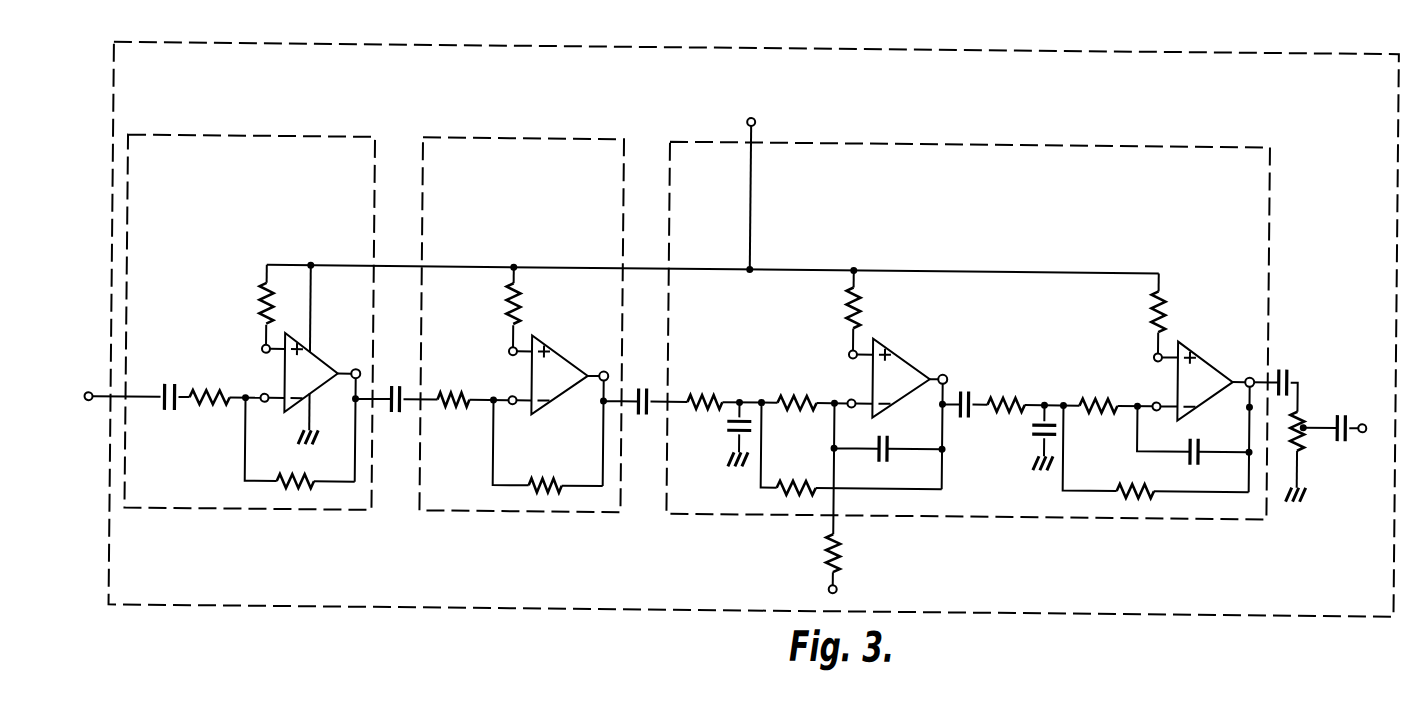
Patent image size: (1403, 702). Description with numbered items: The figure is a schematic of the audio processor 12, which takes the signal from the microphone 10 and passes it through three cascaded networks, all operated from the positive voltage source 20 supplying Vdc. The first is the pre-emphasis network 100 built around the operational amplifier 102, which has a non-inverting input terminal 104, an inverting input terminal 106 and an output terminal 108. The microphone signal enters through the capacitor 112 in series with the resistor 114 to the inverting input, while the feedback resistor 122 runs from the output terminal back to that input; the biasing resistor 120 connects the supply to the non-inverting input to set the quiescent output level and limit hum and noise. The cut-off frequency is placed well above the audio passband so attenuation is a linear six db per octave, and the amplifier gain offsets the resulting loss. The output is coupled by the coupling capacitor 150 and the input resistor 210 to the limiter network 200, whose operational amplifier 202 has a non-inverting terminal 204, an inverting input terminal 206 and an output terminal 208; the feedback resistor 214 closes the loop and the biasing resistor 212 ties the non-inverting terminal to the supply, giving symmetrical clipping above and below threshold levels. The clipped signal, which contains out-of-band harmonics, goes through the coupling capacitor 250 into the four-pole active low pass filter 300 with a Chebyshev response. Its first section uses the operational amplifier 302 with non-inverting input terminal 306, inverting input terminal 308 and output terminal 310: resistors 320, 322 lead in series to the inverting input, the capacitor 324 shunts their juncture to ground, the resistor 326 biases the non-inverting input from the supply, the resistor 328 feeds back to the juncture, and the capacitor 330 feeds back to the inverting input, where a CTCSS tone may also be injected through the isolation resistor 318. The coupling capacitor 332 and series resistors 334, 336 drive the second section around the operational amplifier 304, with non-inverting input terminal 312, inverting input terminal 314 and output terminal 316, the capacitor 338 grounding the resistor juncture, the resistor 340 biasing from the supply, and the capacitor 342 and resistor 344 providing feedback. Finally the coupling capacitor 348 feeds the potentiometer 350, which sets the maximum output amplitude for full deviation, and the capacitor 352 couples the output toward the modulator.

The microphone 10 is at (96, 400).
The audio processor 12 is at (436, 90).
The positive voltage source 20 is at (746, 119).
The pre-emphasis network 100 is at (231, 181).
The operational amplifier 102 is at (312, 398).
The non-inverting input terminal 104 is at (262, 354).
The inverting input terminal 106 is at (266, 397).
The output terminal 108 is at (357, 372).
The capacitor 112 is at (173, 418).
The resistor 114 is at (208, 409).
The biasing resistor 120 is at (259, 312).
The feedback resistor 122 is at (294, 478).
The coupling capacitor 150 is at (396, 389).
The limiter network 200 is at (501, 181).
The operational amplifier 202 is at (555, 406).
The non-inverting terminal 204 is at (509, 354).
The inverting input terminal 206 is at (513, 398).
The output terminal 208 is at (606, 372).
The input resistor 210 is at (452, 410).
The biasing resistor 212 is at (522, 303).
The feedback resistor 214 is at (544, 480).
The coupling capacitor 250 is at (644, 389).
The four-pole active low pass filter 300 is at (973, 181).
The operational amplifier 302 is at (893, 407).
The operational amplifier 304 is at (1197, 407).
The non-inverting input terminal 306 is at (849, 353).
The inverting input terminal 308 is at (853, 397).
The output terminal 310 is at (945, 372).
The non-inverting input terminal 312 is at (1154, 355).
The inverting input terminal 314 is at (1160, 398).
The output terminal 316 is at (1252, 372).
The isolation resistor 318 is at (842, 551).
The resistor 320 is at (700, 395).
The resistor 322 is at (786, 410).
The capacitor 324 is at (728, 427).
The resistor 326 is at (862, 306).
The resistor 328 is at (786, 480).
The capacitor 330 is at (885, 461).
The coupling capacitor 332 is at (962, 389).
The resistor 334 is at (1006, 395).
The resistor 336 is at (1090, 410).
The capacitor 338 is at (1033, 428).
The resistor 340 is at (1150, 308).
The capacitor 342 is at (1196, 460).
The resistor 344 is at (1130, 481).
The coupling capacitor 348 is at (1288, 365).
The potentiometer 350 is at (1305, 440).
The capacitor 352 is at (1343, 410).